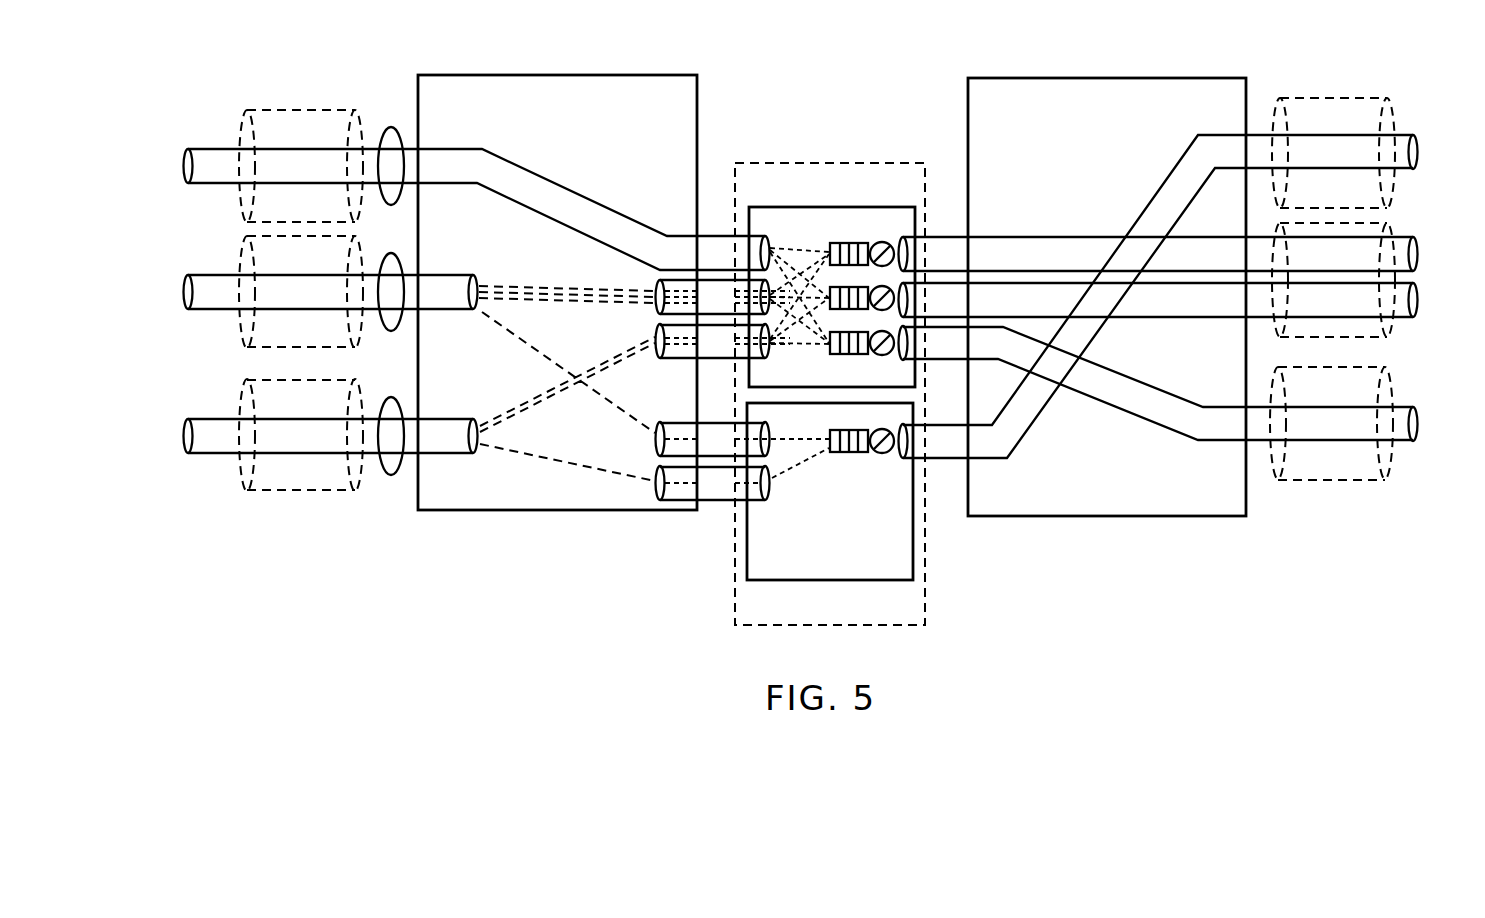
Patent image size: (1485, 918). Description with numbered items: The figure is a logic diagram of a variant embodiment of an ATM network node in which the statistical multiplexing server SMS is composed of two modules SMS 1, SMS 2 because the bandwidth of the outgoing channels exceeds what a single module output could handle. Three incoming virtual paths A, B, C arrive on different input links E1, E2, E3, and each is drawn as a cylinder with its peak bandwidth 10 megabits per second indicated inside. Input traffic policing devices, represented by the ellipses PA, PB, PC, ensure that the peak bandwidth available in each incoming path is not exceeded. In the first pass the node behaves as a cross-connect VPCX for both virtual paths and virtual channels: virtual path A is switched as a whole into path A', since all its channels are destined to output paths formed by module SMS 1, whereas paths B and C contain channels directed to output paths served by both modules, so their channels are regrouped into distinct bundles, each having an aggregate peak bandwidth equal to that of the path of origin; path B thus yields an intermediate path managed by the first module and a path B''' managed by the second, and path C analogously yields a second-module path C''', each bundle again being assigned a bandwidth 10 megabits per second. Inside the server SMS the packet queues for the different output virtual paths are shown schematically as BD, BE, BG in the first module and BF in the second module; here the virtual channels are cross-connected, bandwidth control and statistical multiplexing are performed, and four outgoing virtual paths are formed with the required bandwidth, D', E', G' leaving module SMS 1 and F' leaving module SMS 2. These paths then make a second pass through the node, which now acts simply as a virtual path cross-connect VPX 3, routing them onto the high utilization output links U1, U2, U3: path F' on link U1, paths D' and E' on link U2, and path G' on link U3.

The peak bandwidth 10 is at (802, 317).
The virtual path A is at (447, 209).
The virtual path B is at (303, 292).
The virtual path C is at (301, 436).
The input link E1 is at (246, 119).
The input link E2 is at (246, 247).
The input link E3 is at (246, 390).
The input traffic policing device PA is at (392, 128).
The input traffic policing device PB is at (392, 254).
The input traffic policing device PC is at (392, 398).
The virtual path and virtual channel cross-connect VPCX is at (562, 75).
The virtual path A' is at (739, 223).
The intermediate virtual path B''' is at (732, 416).
The intermediate virtual path C''' is at (723, 465).
The statistical multiplexing server SMS is at (836, 163).
The server module SMS1 SMS 1 is at (833, 207).
The server module SMS2 SMS 2 is at (823, 580).
The packet queue BD is at (837, 245).
The packet queue BE is at (838, 309).
The packet queue BG is at (838, 354).
The packet queue BF is at (838, 452).
The virtual path cross-connect VPX 3 is at (1112, 78).
The output link U1 is at (1395, 117).
The output link U2 is at (1395, 240).
The output link U3 is at (1393, 391).
The output virtual path F' is at (1187, 296).
The output virtual path D' is at (1189, 254).
The output virtual path E' is at (1188, 300).
The output virtual path G' is at (1189, 383).